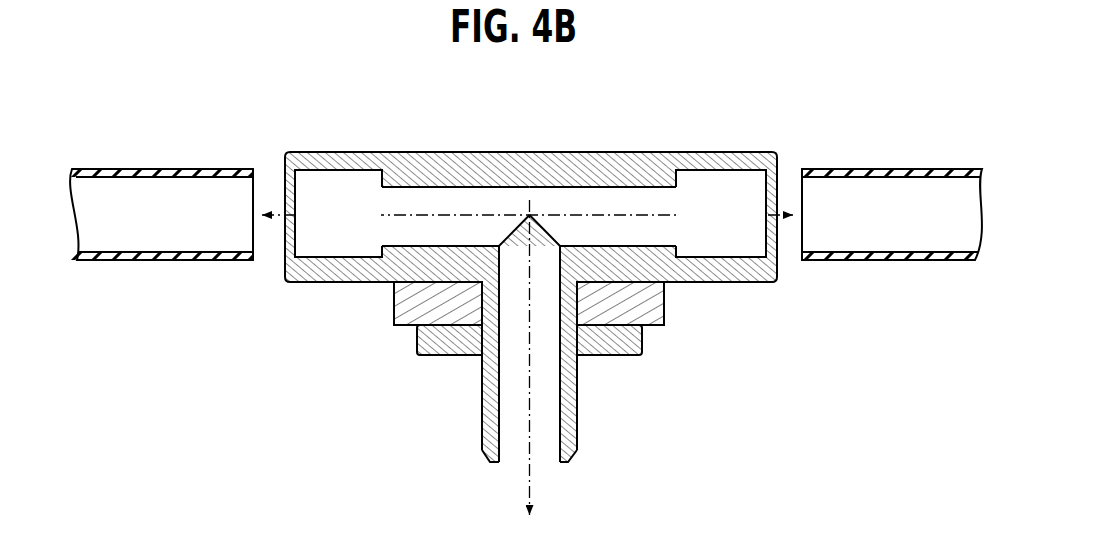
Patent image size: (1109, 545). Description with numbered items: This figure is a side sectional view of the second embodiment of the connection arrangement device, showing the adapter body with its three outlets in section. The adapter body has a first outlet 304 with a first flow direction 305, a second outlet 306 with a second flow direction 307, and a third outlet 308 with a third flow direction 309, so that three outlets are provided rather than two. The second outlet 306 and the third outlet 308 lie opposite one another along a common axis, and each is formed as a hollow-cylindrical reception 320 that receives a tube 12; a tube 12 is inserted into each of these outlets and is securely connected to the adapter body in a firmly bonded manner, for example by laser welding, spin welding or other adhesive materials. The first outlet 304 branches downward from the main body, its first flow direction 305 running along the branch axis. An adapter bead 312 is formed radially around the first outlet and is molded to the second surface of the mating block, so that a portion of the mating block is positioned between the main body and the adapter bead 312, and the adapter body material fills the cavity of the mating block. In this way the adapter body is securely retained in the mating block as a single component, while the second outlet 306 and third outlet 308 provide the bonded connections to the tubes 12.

The tube 12 is at (157, 259).
The first outlet 304 is at (545, 463).
The first flow direction 305 is at (527, 441).
The second outlet 306 is at (692, 189).
The second flow direction 307 is at (748, 213).
The third outlet 308 is at (354, 182).
The third flow direction 309 is at (331, 215).
The adapter bead 312 is at (438, 350).
The hollow-cylindrical reception 320 is at (317, 251).